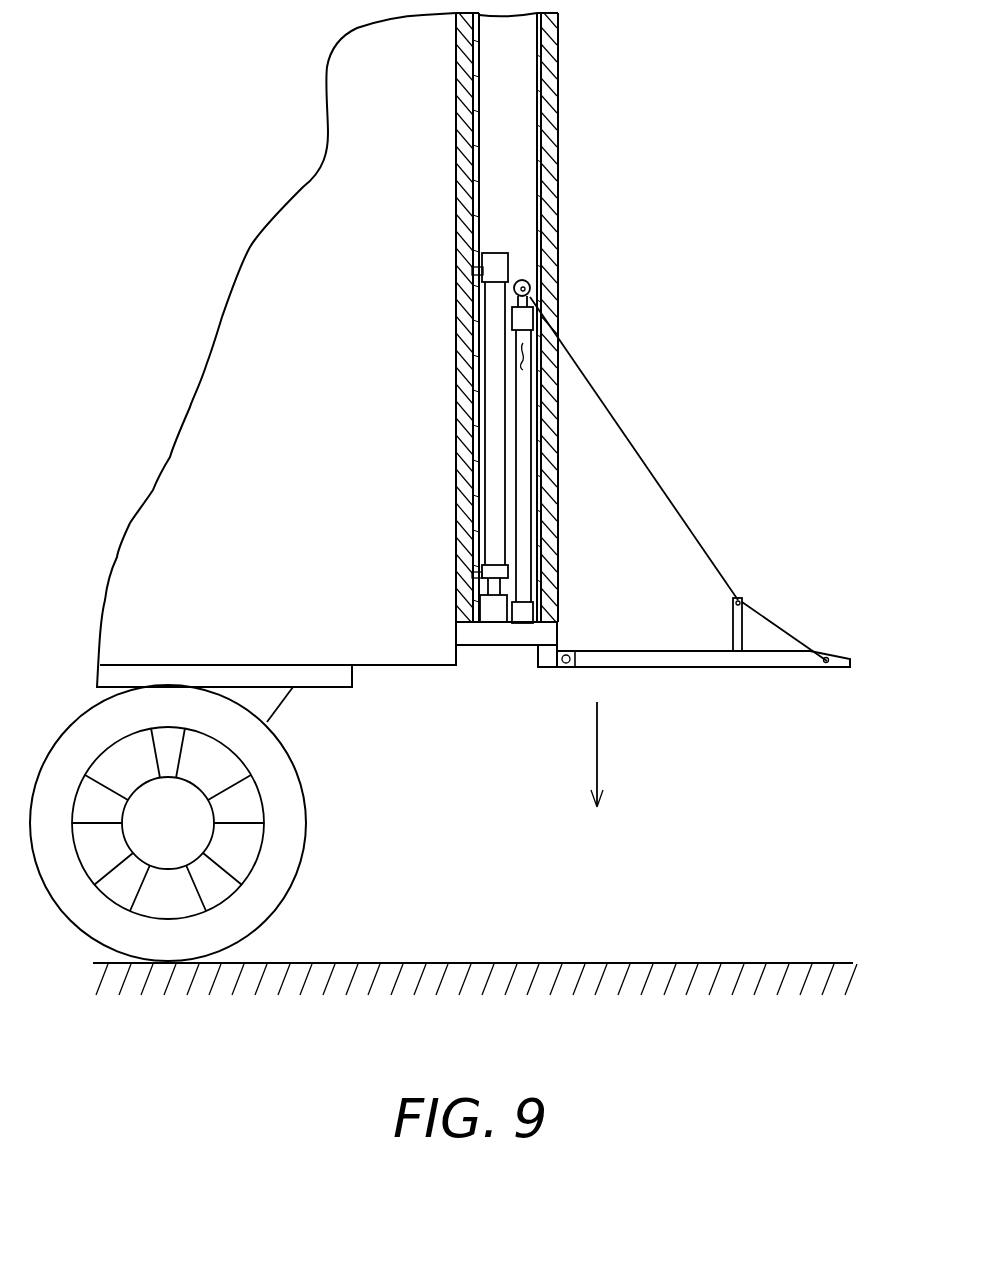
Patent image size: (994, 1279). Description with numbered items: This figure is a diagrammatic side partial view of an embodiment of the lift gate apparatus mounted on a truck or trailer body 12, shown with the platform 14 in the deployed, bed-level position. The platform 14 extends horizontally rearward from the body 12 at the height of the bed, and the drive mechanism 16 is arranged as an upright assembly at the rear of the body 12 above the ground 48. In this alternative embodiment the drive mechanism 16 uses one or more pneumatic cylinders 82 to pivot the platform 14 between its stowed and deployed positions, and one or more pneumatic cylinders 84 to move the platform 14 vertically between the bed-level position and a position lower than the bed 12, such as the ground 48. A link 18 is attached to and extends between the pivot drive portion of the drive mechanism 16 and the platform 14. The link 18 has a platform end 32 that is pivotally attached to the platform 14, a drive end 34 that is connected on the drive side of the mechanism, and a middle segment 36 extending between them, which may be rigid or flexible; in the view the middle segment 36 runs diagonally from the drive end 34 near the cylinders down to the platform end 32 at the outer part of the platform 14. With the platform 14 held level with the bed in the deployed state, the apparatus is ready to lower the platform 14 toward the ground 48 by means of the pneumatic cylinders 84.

The truck or trailer body 12 is at (225, 307).
The platform 14 is at (605, 668).
The drive mechanism 16 is at (448, 480).
The link 18 is at (678, 479).
The platform end 32 is at (820, 668).
The drive end 34 is at (530, 293).
The middle segment 36 is at (625, 432).
The ground 48 is at (343, 962).
The pneumatic cylinder 82 is at (524, 352).
The pneumatic cylinder 84 is at (497, 385).